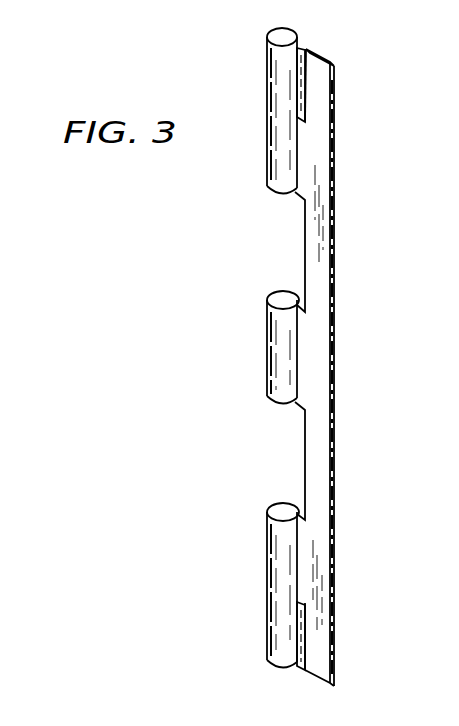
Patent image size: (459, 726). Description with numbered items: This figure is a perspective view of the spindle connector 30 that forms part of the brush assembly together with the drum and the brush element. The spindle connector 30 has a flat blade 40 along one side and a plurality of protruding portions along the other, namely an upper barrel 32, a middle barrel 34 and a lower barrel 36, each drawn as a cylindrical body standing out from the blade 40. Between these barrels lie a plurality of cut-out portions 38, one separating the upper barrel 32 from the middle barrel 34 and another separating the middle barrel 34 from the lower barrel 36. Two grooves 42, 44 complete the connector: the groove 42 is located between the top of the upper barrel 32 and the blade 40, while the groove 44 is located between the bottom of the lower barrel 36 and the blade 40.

The spindle connector 30 is at (318, 41).
The upper barrel 32 is at (272, 73).
The middle barrel 34 is at (278, 347).
The lower barrel 36 is at (278, 553).
The cut-out portions 38 is at (284, 231).
The blade 40 is at (308, 266).
The groove 42 is at (302, 93).
The groove 44 is at (305, 632).